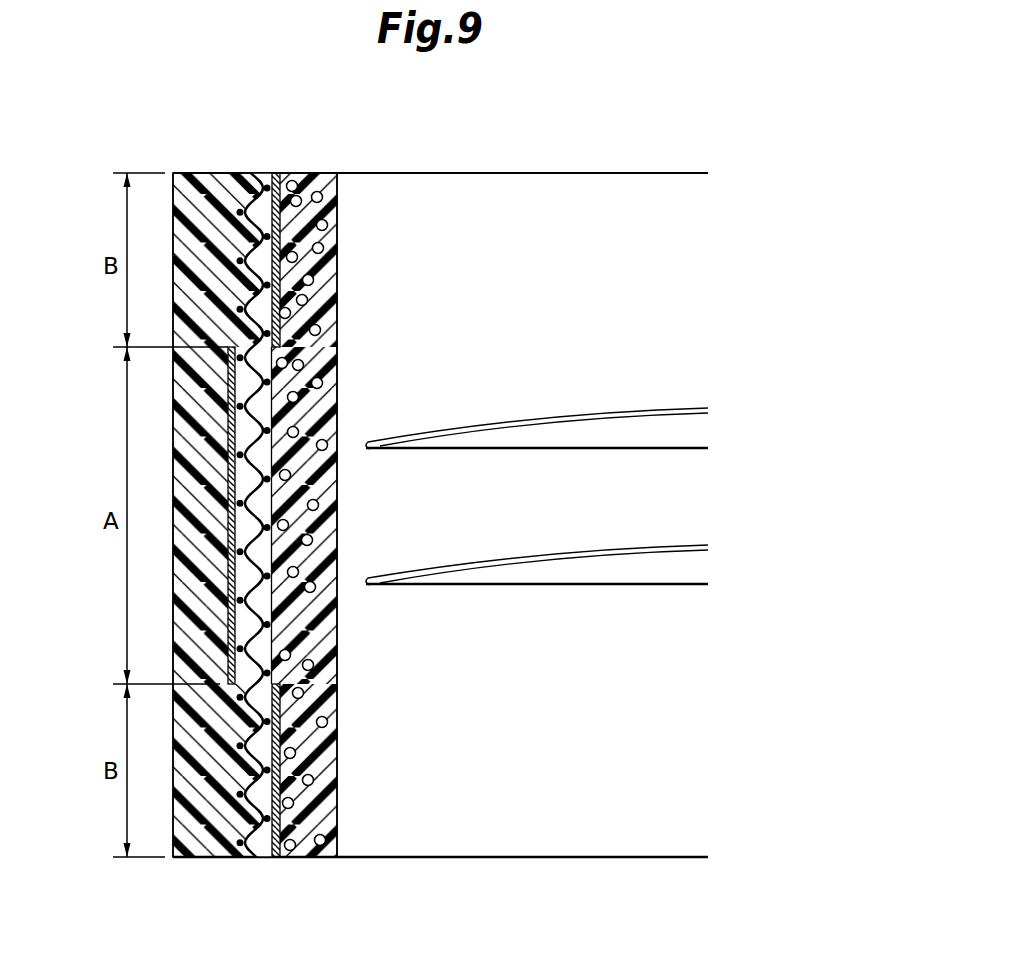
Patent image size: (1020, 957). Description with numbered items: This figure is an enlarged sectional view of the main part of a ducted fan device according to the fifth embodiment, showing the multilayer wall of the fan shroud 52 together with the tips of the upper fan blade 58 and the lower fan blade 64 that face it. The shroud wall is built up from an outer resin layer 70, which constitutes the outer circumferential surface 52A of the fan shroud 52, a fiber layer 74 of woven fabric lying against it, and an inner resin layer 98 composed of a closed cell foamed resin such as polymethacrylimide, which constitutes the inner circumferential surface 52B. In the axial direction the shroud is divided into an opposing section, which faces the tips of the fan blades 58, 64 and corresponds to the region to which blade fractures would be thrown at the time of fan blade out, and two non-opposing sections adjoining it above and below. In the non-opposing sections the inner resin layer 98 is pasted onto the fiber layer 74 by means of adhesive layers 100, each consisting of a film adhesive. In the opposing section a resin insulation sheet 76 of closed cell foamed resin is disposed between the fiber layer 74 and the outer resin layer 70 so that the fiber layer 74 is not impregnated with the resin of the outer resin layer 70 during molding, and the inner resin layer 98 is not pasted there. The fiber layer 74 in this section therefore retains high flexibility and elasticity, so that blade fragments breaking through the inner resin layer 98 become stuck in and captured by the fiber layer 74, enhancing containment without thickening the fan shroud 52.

The fan shroud 52 is at (337, 164).
The outer circumferential surface 52A is at (173, 585).
The inner circumferential surface 52B is at (337, 228).
The upper fan blade 58 is at (613, 425).
The lower fan blade 64 is at (632, 570).
The outer resin layer 70 is at (208, 838).
The fiber layer 74 is at (264, 606).
The resin insulation sheet 76 is at (232, 532).
The inner resin layer 98 is at (308, 840).
The adhesive layer 100 is at (274, 290).